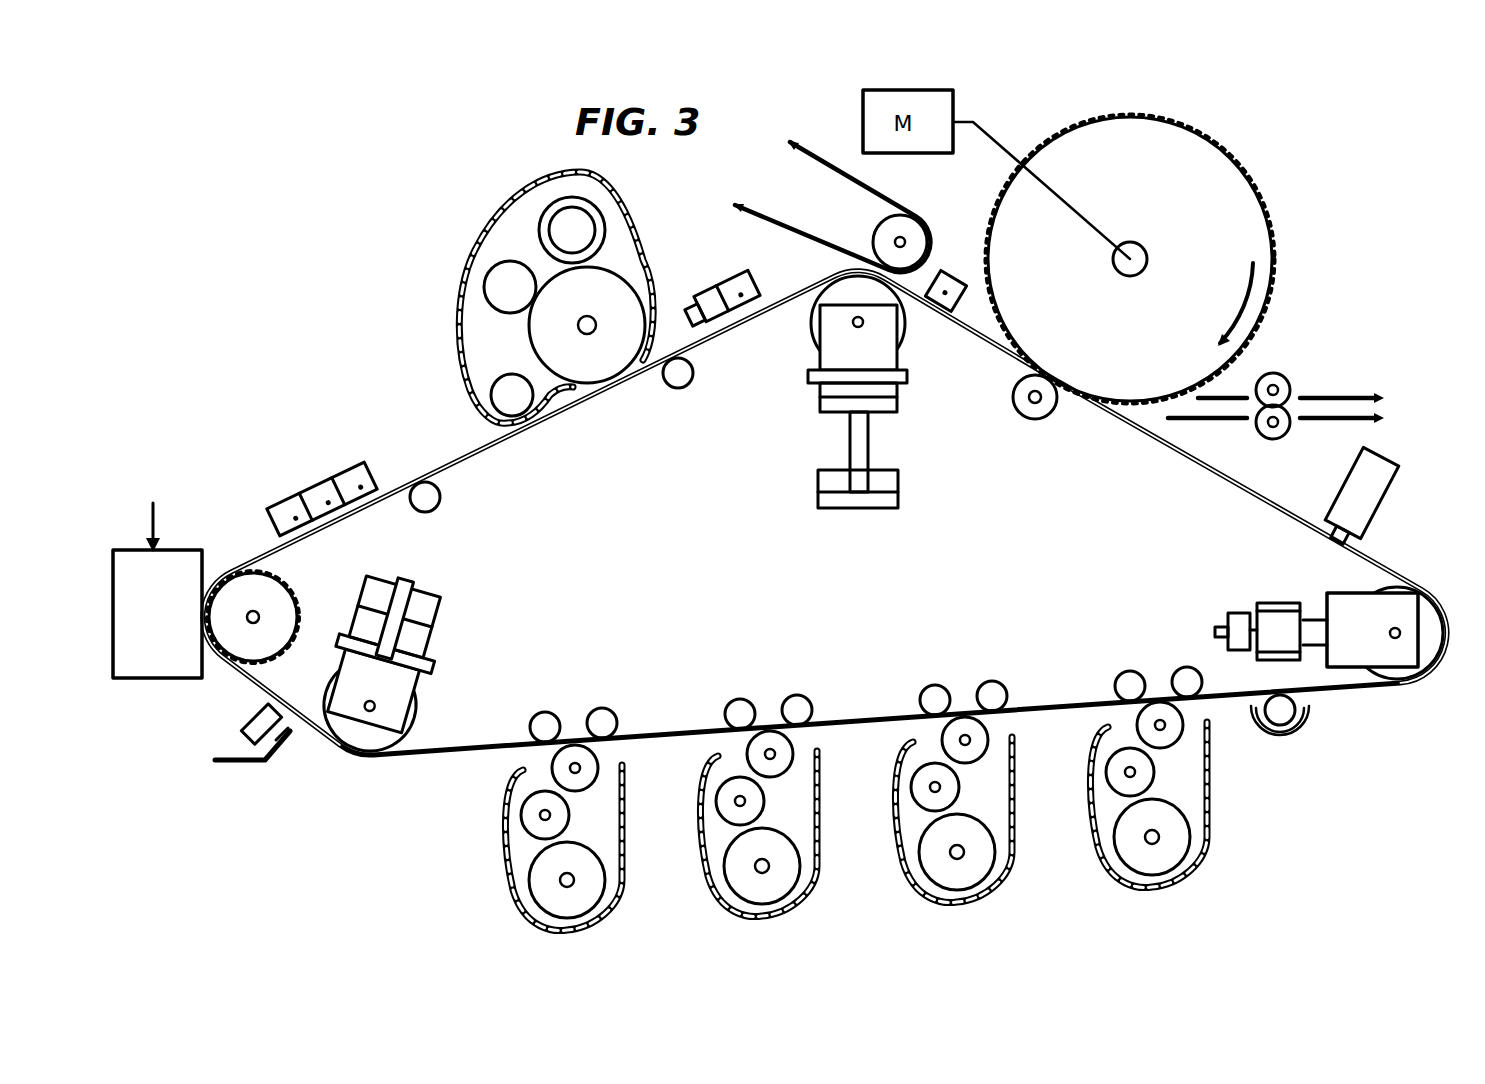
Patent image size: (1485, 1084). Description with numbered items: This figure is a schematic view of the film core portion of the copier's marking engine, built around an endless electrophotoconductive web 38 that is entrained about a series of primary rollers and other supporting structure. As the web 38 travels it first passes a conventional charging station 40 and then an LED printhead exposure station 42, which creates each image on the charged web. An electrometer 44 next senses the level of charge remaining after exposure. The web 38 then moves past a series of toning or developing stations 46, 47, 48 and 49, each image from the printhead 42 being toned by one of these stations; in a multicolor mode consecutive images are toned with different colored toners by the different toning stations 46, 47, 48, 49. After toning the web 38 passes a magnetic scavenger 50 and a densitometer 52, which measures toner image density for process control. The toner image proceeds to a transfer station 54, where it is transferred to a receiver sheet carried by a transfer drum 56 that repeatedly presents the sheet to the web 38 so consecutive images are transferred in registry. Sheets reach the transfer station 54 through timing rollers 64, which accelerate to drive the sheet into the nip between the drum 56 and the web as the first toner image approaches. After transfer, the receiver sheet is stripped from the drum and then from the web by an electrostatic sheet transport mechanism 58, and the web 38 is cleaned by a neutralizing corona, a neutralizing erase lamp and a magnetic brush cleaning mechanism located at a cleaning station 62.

The electrophotoconductive web 38 is at (466, 758).
The charging station 40 is at (328, 490).
The LED printhead exposure station 42 is at (124, 550).
The electrometer 44 is at (240, 766).
The toning station 46 is at (622, 868).
The toning station 47 is at (817, 856).
The toning station 48 is at (1012, 842).
The toning station 49 is at (1207, 827).
The magnetic scavenger 50 is at (1298, 718).
The densitometer 52 is at (1388, 468).
The transfer station 54 is at (1258, 356).
The transfer drum 56 is at (1257, 212).
The electrostatic sheet transport mechanism 58 is at (792, 224).
The cleaning station 62 is at (680, 285).
The timing rollers 64 is at (1286, 436).